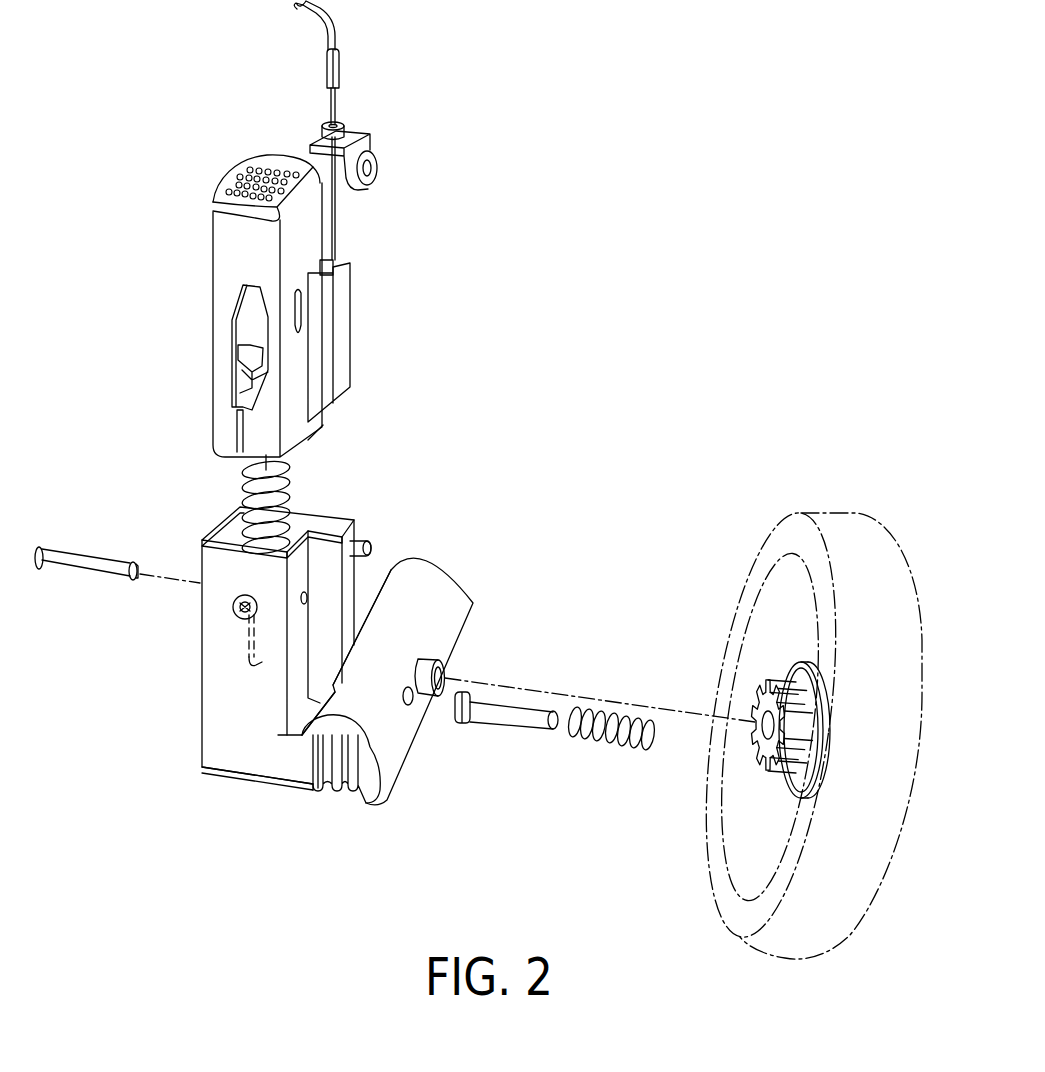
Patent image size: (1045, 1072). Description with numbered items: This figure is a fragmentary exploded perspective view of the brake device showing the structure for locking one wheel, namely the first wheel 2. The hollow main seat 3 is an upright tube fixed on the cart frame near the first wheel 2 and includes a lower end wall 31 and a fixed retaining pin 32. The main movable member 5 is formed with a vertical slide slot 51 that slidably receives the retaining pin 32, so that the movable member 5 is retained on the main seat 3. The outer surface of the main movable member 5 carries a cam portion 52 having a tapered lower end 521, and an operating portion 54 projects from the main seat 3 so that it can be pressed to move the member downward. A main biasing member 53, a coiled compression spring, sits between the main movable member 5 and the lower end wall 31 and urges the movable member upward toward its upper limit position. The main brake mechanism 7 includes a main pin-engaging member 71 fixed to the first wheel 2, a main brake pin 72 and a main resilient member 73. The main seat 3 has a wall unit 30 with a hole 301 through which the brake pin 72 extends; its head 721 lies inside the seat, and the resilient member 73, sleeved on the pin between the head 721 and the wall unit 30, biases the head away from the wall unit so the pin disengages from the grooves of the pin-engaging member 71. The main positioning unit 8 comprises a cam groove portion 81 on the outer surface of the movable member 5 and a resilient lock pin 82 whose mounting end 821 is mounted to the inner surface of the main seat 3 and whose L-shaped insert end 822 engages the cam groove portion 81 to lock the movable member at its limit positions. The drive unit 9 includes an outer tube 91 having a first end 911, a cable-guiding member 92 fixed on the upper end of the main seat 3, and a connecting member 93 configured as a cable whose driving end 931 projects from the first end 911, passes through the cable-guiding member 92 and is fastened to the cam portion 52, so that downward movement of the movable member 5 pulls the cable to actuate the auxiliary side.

The first wheel 2 is at (857, 514).
The main seat 3 is at (158, 742).
The wall unit 30 is at (390, 727).
The hole 301 is at (441, 672).
The lower end wall 31 is at (265, 789).
The fixed retaining pin 32 is at (76, 564).
The main movable member 5 is at (203, 284).
The vertical slide slot 51 is at (301, 317).
The cam portion 52 is at (342, 355).
The tapered lower end 521 is at (327, 407).
The main biasing member 53 is at (243, 480).
The operating portion 54 is at (256, 172).
The main brake mechanism 7 is at (670, 598).
The main pin-engaging member 71 is at (775, 766).
The main brake pin 72 is at (530, 718).
The head 721 is at (458, 722).
The main resilient member 73 is at (602, 745).
The main positioning unit 8 is at (145, 505).
The cam groove portion 81 is at (242, 333).
The resilient lock pin 82 is at (243, 640).
The mounting end 821 is at (233, 605).
The L-shaped insert end 822 is at (252, 668).
The drive unit 9 is at (392, 95).
The outer tube 91 is at (335, 23).
The first end 911 is at (326, 67).
The cable-guiding member 92 is at (376, 170).
The connecting member 93 is at (330, 104).
The driving end 931 is at (334, 225).